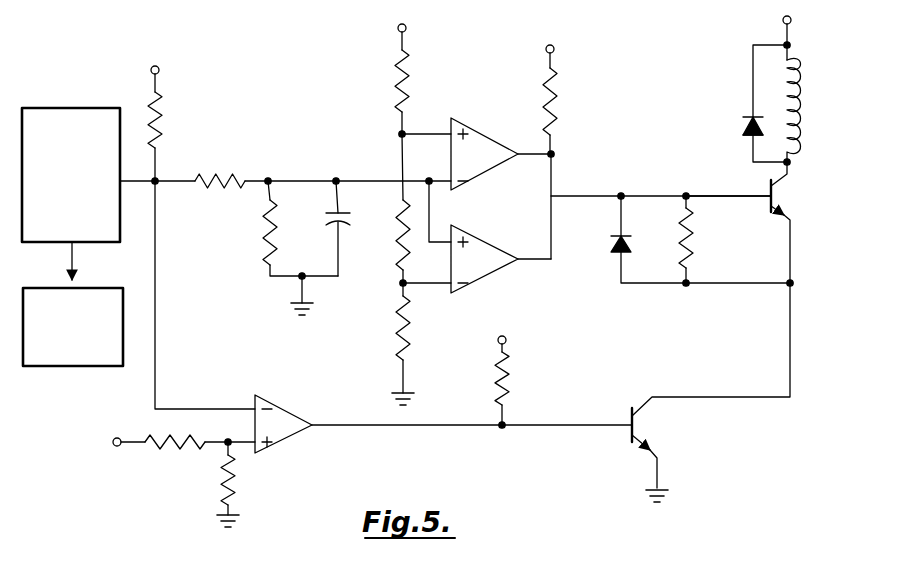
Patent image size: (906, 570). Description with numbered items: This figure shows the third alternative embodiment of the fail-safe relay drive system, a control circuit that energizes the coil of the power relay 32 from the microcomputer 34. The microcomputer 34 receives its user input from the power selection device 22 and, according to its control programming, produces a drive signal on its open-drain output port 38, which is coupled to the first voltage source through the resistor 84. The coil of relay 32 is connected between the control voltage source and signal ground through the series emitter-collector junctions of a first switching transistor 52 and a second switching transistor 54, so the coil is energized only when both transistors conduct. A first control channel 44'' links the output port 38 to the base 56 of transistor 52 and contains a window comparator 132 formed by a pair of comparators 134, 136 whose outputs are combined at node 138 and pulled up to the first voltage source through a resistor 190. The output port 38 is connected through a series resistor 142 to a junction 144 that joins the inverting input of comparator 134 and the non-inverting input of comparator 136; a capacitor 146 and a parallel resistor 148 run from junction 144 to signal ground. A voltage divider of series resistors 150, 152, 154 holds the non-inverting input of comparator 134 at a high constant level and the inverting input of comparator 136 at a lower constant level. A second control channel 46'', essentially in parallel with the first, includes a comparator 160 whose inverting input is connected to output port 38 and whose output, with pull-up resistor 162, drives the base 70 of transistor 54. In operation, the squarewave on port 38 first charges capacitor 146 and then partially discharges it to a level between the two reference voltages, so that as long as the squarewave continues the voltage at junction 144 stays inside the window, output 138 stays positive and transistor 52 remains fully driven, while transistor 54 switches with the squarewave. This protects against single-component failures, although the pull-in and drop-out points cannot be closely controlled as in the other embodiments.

The power selection device 22 is at (88, 366).
The power relay coil 32 is at (784, 88).
The microcomputer 34 is at (100, 242).
The output port 38 is at (120, 185).
The first control channel 44'' is at (716, 173).
The second control channel 46'' is at (447, 405).
The first switching transistor 52 is at (783, 186).
The second switching transistor 54 is at (640, 402).
The base of first switching transistor 56 is at (726, 194).
The base of second switching transistor 70 is at (571, 423).
The resistor 84 is at (160, 140).
The window comparator 132 is at (501, 127).
The comparator 134 is at (470, 178).
The comparator 136 is at (486, 272).
The combined comparator output 138 is at (560, 190).
The series resistor 142 is at (205, 173).
The junction 144 is at (302, 178).
The capacitor 146 is at (325, 228).
The parallel resistor 148 is at (266, 220).
The resistor 150 is at (398, 73).
The resistor 152 is at (400, 212).
The resistor 154 is at (410, 318).
The comparator 160 is at (276, 447).
The pull-up resistor 162 is at (506, 372).
The pull-up resistor 190 is at (556, 94).